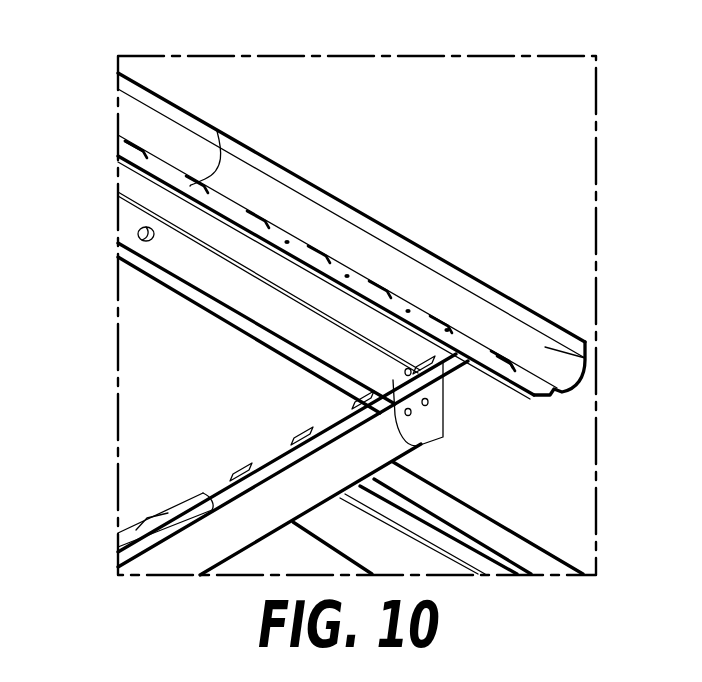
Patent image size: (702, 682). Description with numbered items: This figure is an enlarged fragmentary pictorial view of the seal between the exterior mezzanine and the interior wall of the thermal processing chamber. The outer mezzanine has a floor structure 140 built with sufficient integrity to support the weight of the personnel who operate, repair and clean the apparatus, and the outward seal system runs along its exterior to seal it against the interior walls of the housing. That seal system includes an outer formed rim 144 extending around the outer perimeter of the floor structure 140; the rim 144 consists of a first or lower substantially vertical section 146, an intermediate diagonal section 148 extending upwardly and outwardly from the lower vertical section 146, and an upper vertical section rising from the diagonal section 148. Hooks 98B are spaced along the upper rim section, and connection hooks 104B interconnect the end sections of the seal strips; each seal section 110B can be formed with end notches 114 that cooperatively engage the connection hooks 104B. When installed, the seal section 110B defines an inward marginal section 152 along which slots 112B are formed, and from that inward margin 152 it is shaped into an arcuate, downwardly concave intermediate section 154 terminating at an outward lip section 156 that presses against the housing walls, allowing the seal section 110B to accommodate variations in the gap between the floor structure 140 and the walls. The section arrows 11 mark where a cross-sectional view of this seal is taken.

The hooks 98B is at (319, 190).
The connection hooks 104B is at (121, 139).
The notches 114 is at (298, 277).
The seal section 110B is at (401, 234).
The outward lip section 156 is at (596, 320).
The intermediate section 154 is at (613, 368).
The inward marginal section 152 is at (599, 385).
The slots 112B is at (584, 390).
The intermediate diagonal section 148 is at (526, 409).
The lower substantially vertical section 146 is at (389, 497).
The outer formed rim 144 is at (386, 464).
The mezzanine floor structure 140 is at (219, 324).
The section line 11 is at (382, 180).